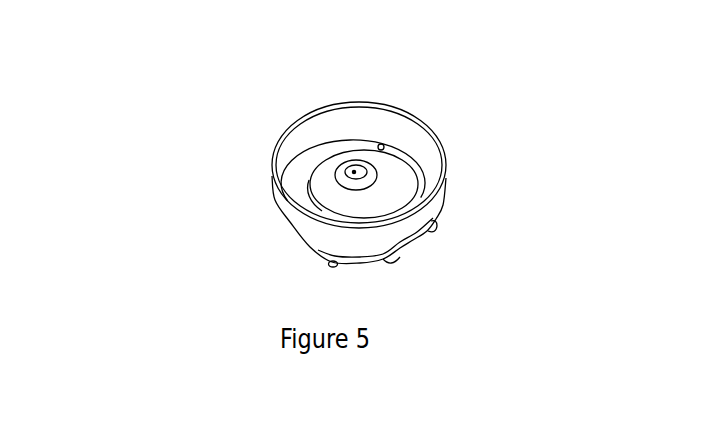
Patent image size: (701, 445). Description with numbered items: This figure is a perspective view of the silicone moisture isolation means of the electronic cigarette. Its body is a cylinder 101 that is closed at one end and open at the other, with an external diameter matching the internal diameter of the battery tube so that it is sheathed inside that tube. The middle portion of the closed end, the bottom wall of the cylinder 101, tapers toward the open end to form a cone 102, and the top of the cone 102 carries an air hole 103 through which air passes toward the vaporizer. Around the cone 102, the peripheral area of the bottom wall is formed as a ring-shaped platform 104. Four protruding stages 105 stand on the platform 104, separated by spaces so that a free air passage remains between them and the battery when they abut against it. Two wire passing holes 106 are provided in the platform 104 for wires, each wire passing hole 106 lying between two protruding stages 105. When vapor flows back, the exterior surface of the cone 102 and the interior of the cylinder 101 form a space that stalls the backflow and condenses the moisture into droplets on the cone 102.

The cylinder 101 is at (340, 248).
The cone 102 is at (383, 183).
The air hole 103 is at (354, 172).
The ring-shaped platform 104 is at (308, 197).
The protruding stages 105 is at (421, 246).
The wire passing holes 106 is at (381, 144).